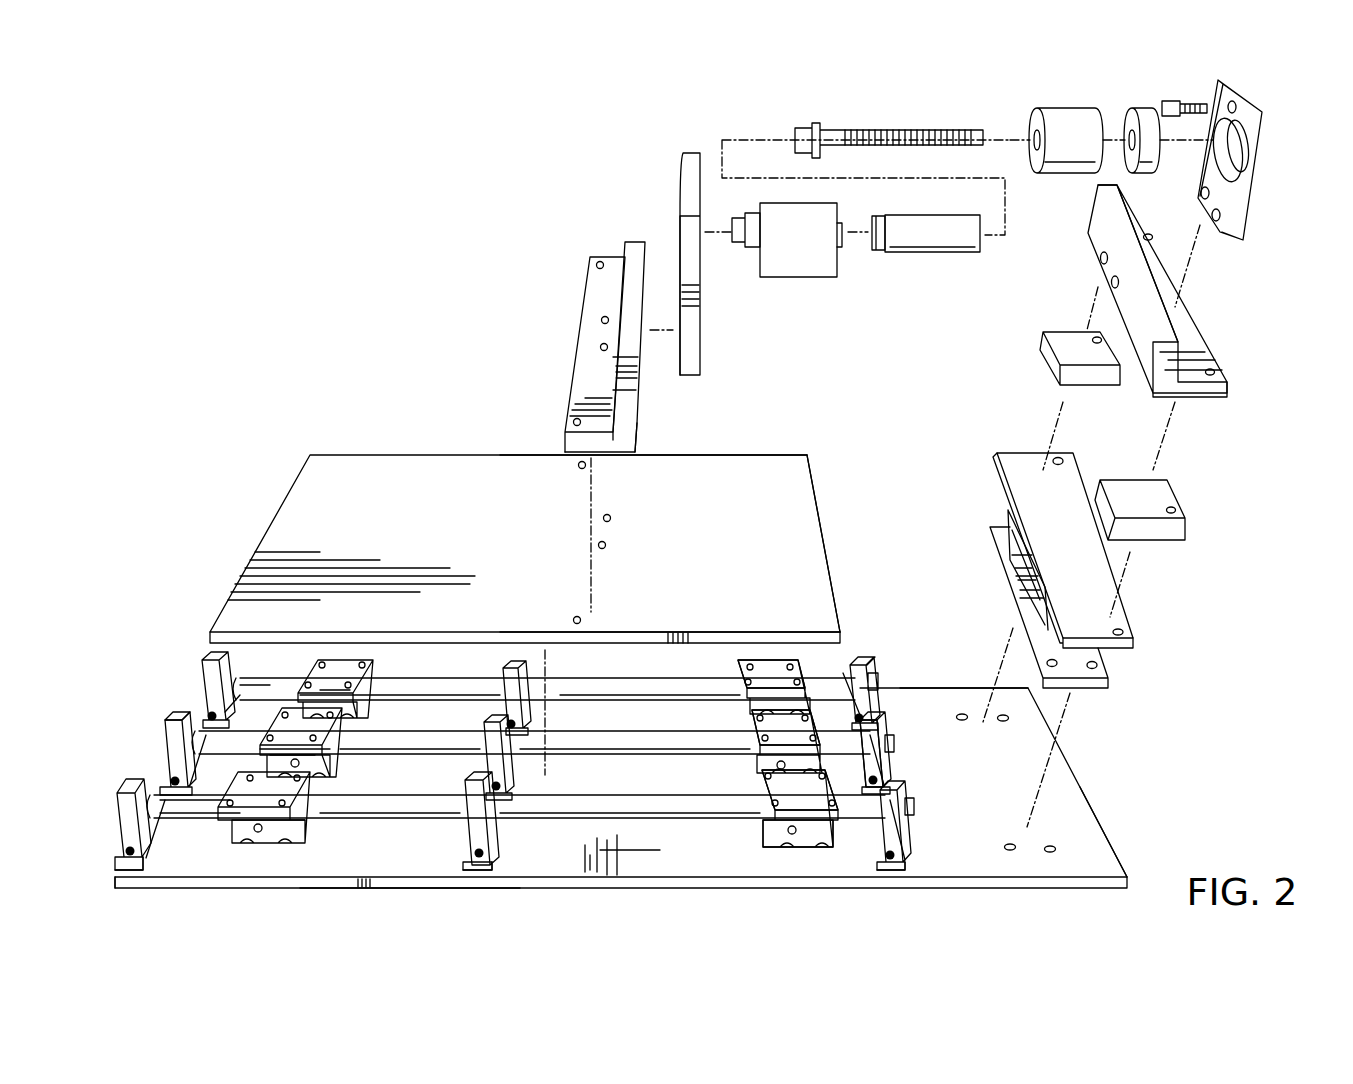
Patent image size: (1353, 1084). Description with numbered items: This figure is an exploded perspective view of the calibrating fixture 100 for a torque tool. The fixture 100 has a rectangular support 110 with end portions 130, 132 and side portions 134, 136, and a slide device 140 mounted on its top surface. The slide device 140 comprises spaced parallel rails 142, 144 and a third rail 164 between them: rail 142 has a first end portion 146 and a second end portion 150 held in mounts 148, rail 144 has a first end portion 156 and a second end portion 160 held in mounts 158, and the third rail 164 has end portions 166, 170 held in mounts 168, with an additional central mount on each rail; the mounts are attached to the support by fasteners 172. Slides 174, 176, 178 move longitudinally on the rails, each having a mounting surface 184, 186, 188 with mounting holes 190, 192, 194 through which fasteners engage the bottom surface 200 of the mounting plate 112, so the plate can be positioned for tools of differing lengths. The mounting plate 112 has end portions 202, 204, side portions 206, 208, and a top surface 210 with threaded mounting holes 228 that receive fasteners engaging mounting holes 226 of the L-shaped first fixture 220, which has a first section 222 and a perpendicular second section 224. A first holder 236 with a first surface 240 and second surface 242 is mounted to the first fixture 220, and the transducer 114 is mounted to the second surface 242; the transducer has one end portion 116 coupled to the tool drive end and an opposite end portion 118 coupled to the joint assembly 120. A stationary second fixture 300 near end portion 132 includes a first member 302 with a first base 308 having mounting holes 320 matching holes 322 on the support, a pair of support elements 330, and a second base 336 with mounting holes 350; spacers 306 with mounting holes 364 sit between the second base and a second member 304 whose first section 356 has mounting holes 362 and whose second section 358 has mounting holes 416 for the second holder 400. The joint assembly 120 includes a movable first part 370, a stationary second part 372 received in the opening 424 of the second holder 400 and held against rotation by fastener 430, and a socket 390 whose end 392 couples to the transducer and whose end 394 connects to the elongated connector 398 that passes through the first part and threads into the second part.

The fixture 100 is at (460, 242).
The support 110 is at (540, 882).
The mounting plate 112 is at (440, 447).
The transducer 114 is at (802, 258).
The end portion 116 is at (749, 250).
The end portion 118 is at (841, 247).
The joint assembly 120 is at (1128, 101).
The end portion 130 is at (162, 790).
The end portion 132 is at (1093, 804).
The side portion 134 is at (407, 891).
The side portion 136 is at (922, 688).
The slide device 140 is at (683, 845).
The rail 142 is at (355, 813).
The rail 144 is at (406, 689).
The first end portion 146 is at (186, 805).
The mount 148 is at (129, 832).
The second end portion 150 is at (852, 818).
The first end portion 156 is at (260, 670).
The mount 158 is at (202, 689).
The second end portion 160 is at (856, 667).
The third rail 164 is at (436, 748).
The first end portion 166 is at (198, 713).
The mount 168 is at (169, 722).
The second end portion 170 is at (872, 746).
The fastener 172 is at (134, 864).
The slide 174 is at (280, 840).
The slide 176 is at (356, 675).
The slide 178 is at (329, 764).
The mounting surface 184 is at (258, 828).
The mounting surface 186 is at (331, 676).
The mounting surface 188 is at (346, 728).
The mounting hole 190 is at (764, 828).
The mounting hole 192 is at (742, 660).
The mounting hole 194 is at (753, 726).
The bottom surface 200 is at (652, 644).
The end portion 202 is at (294, 485).
The end portion 204 is at (825, 512).
The side portion 206 is at (630, 634).
The side portion 208 is at (718, 455).
The top surface 210 is at (476, 527).
The first fixture 220 is at (550, 306).
The first section 222 is at (582, 346).
The second section 224 is at (632, 246).
The mounting hole 226 is at (600, 264).
The mounting hole 228 is at (583, 466).
The first holder 236 is at (660, 162).
The first surface 240 is at (682, 237).
The second surface 242 is at (704, 298).
The second fixture 300 is at (1258, 388).
The first member 302 is at (978, 453).
The second member 304 is at (1234, 330).
The spacer 306 is at (1054, 362).
The first base 308 is at (1024, 590).
The mounting hole 320 is at (1096, 666).
The mounting hole 322 is at (1005, 722).
The support element 330 is at (1016, 548).
The second base 336 is at (1014, 484).
The mounting hole 350 is at (1063, 462).
The first section 356 is at (1187, 315).
The second section 358 is at (1118, 216).
The mounting hole 362 is at (1148, 230).
The mounting hole 364 is at (1098, 350).
The first part 370 is at (1046, 160).
The second part 372 is at (1128, 160).
The socket 390 is at (925, 234).
The end 392 is at (876, 250).
The end 394 is at (984, 240).
The elongated connector 398 is at (918, 127).
The second holder 400 is at (1268, 110).
The mounting hole 416 is at (1101, 263).
The opening 424 is at (1252, 162).
The fastener 430 is at (1174, 106).